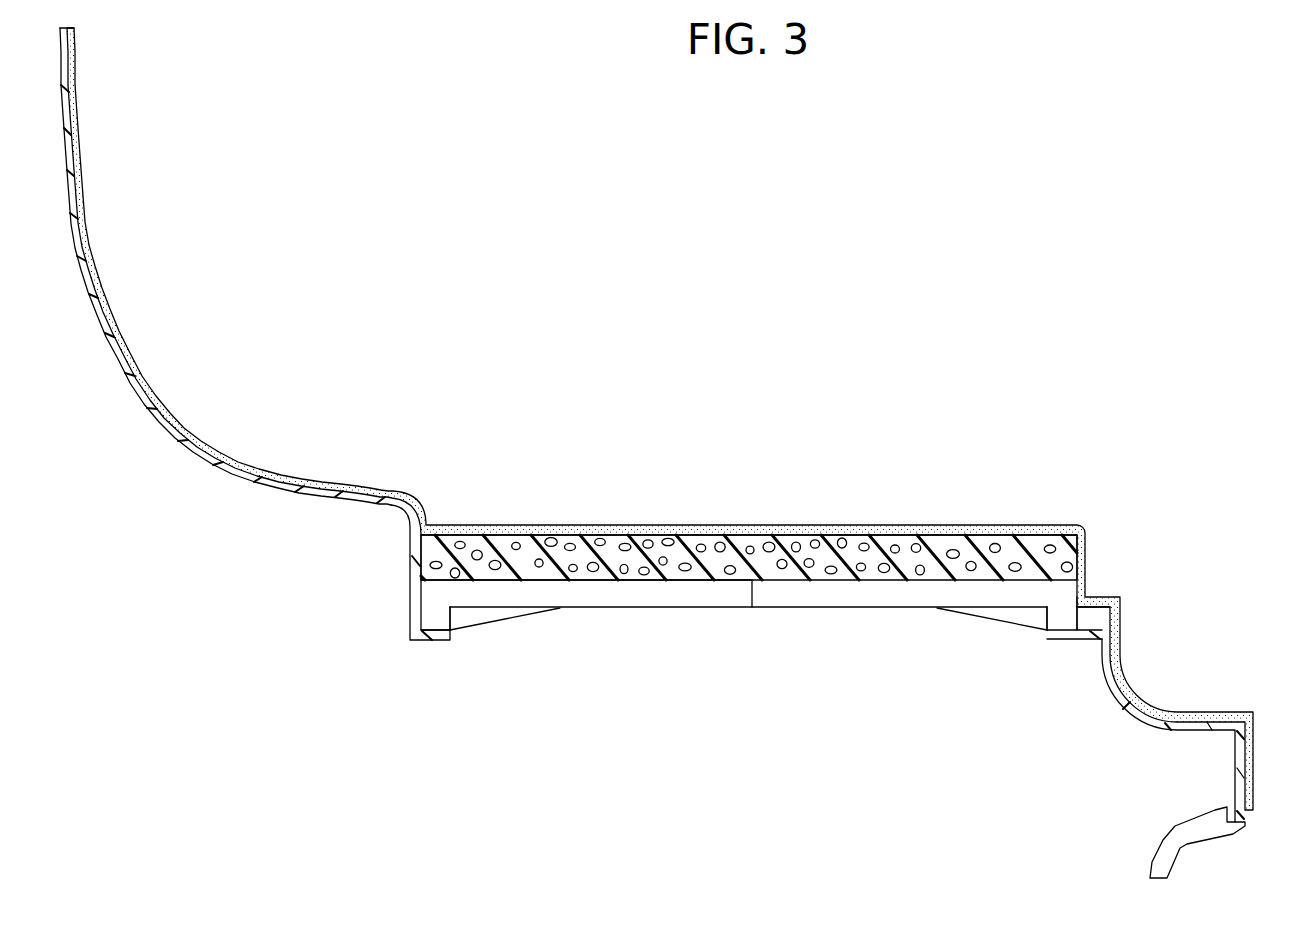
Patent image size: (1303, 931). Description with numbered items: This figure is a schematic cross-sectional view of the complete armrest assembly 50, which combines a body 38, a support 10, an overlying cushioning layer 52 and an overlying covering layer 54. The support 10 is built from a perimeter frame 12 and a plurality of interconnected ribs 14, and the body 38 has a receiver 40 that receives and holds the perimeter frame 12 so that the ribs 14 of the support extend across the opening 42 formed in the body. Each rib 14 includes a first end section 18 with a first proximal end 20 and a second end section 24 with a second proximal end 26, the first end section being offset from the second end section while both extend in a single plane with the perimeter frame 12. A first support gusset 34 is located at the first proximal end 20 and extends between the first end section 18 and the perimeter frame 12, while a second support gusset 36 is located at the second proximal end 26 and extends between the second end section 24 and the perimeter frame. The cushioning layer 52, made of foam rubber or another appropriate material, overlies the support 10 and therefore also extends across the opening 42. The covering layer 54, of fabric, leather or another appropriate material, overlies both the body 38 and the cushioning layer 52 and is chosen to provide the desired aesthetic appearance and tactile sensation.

The support 10 is at (711, 636).
The perimeter frame 12 is at (427, 617).
The interconnected ribs 14 is at (727, 580).
The first end section 18 is at (894, 597).
The first proximal end 20 is at (1036, 596).
The second end section 24 is at (582, 596).
The second proximal end 26 is at (461, 596).
The first support gusset 34 is at (1030, 617).
The second support gusset 36 is at (482, 614).
The body 38 is at (180, 450).
The receiver 40 is at (438, 628).
The opening 42 is at (663, 613).
The armrest assembly 50 is at (888, 268).
The cushioning layer 52 is at (784, 557).
The covering layer 54 is at (92, 247).